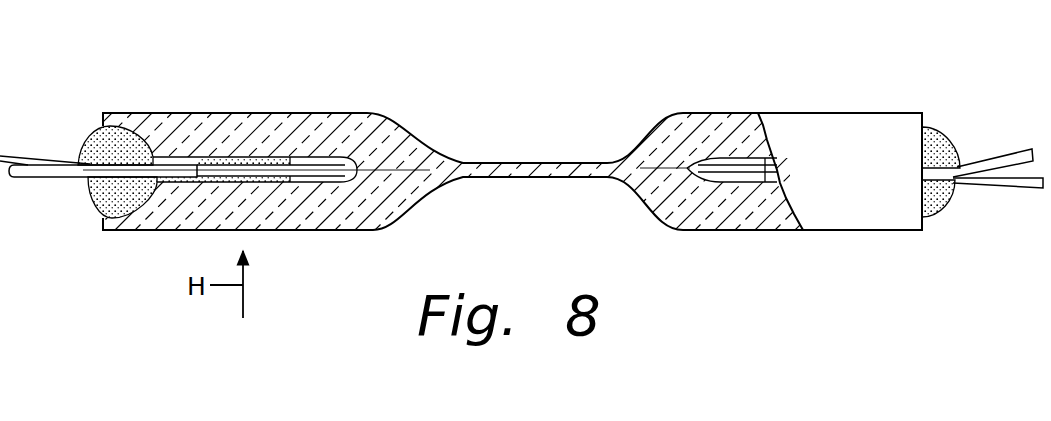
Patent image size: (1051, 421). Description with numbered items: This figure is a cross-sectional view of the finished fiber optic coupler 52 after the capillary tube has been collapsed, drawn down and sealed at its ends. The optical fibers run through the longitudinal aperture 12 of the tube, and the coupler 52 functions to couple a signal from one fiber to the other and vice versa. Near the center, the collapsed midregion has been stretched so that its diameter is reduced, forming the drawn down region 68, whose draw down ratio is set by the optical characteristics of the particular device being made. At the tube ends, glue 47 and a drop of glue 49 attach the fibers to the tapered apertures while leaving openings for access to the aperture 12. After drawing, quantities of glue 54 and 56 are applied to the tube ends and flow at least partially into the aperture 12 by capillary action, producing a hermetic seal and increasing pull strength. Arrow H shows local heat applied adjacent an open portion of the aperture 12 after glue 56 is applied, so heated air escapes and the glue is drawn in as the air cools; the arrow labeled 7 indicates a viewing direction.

The section view direction indicator 7 is at (12, 254).
The longitudinal aperture 12 is at (311, 157).
The glue 47 is at (942, 198).
The drop of glue 49 is at (100, 205).
The fiber optic coupler 52 is at (318, 233).
The quantity of glue 54 is at (778, 170).
The quantity of glue 56 is at (97, 142).
The drawn down region 68 is at (527, 163).